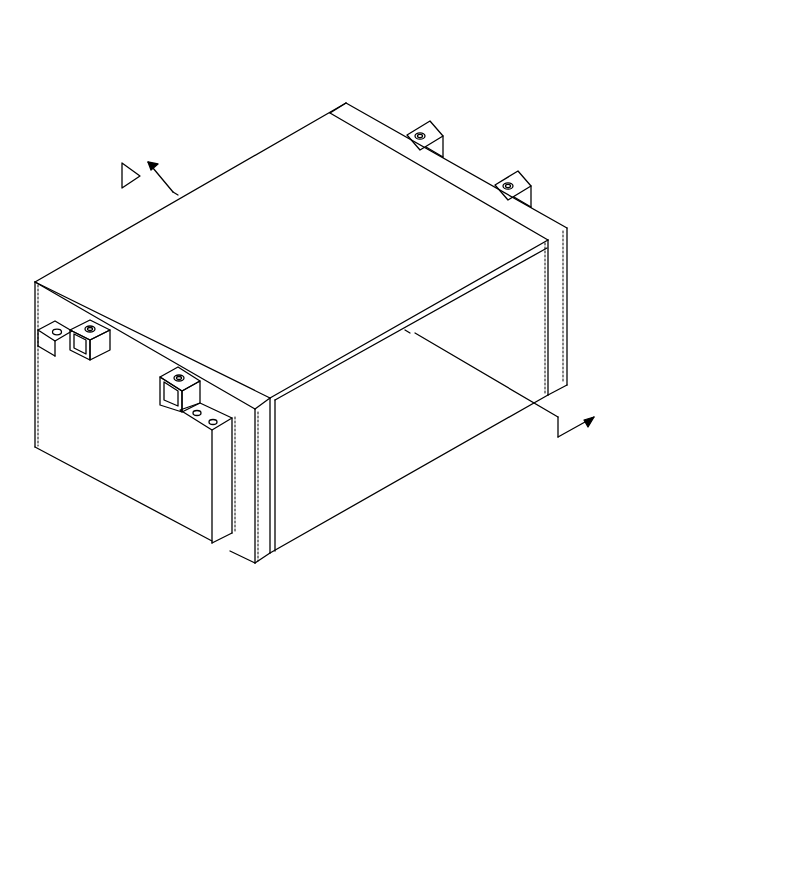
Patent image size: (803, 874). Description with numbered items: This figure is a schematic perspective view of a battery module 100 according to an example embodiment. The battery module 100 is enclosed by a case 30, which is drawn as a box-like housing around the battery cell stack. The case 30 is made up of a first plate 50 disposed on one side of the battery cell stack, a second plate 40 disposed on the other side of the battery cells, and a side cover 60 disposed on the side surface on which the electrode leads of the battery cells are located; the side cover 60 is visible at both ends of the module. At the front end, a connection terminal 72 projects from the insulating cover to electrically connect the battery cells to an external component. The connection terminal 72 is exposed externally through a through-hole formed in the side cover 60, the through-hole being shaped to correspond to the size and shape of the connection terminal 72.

The battery module 100 is at (264, 40).
The case 30 is at (665, 198).
The second plate 40 is at (515, 235).
The first plate 50 is at (525, 298).
The side cover 60 is at (558, 343).
The connection terminal 72 is at (182, 408).